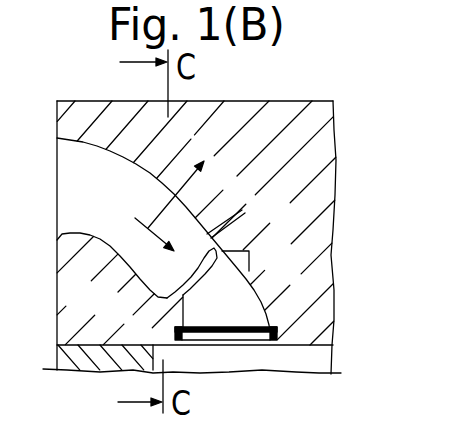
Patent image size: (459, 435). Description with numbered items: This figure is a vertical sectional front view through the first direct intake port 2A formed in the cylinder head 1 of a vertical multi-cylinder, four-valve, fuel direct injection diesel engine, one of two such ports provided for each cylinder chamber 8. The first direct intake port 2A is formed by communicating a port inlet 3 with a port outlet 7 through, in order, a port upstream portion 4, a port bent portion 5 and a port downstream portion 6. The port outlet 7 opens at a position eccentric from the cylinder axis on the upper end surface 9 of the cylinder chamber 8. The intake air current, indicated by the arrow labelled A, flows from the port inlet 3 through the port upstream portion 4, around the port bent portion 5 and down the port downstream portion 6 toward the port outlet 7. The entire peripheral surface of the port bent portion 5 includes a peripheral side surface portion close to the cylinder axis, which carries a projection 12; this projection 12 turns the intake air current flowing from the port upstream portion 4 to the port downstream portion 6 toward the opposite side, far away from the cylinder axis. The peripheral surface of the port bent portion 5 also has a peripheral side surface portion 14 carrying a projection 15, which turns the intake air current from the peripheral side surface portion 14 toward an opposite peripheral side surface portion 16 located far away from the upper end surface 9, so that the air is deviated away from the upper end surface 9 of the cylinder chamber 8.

The cylinder head 1 is at (316, 143).
The first direct intake port 2A is at (108, 180).
The port inlet 3 is at (58, 173).
The port upstream portion 4 is at (107, 215).
The port bent portion 5 is at (212, 244).
The port downstream portion 6 is at (240, 308).
The port outlet 7 is at (230, 348).
The cylinder chamber 8 is at (316, 360).
The upper end surface 9 is at (302, 347).
The projection 12 is at (240, 262).
The peripheral side surface portion 14 is at (150, 296).
The projection 15 is at (170, 306).
The opposite peripheral side surface portion 16 is at (230, 205).